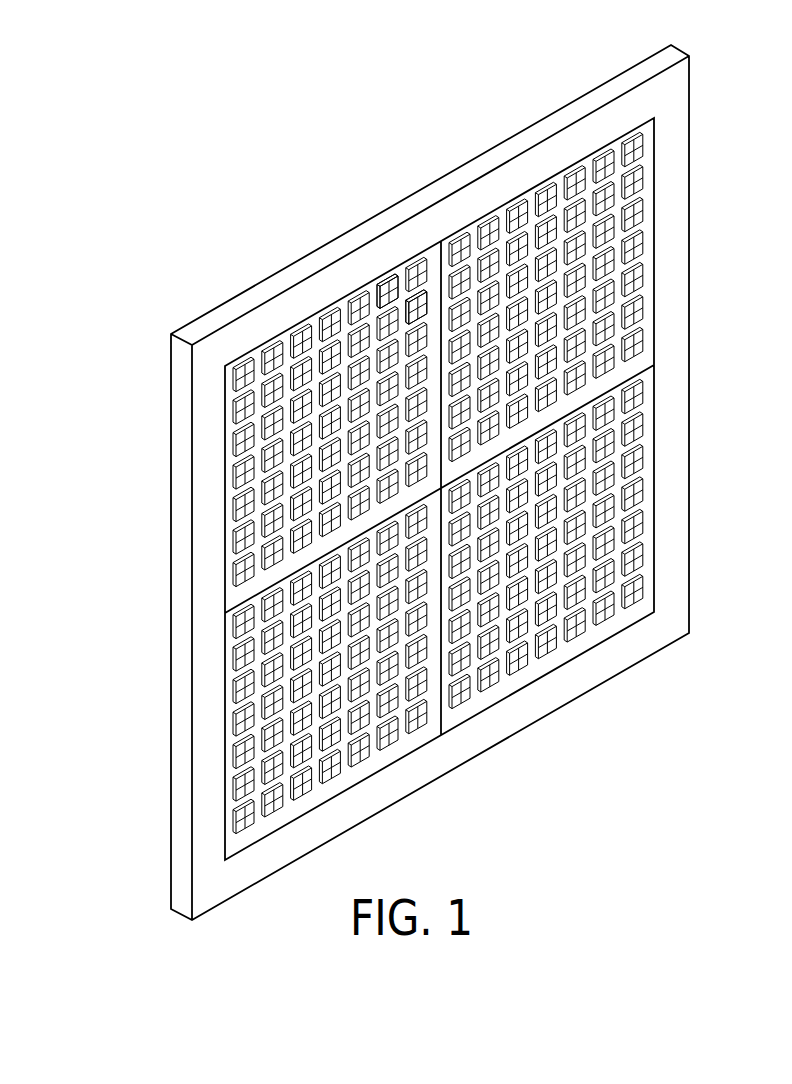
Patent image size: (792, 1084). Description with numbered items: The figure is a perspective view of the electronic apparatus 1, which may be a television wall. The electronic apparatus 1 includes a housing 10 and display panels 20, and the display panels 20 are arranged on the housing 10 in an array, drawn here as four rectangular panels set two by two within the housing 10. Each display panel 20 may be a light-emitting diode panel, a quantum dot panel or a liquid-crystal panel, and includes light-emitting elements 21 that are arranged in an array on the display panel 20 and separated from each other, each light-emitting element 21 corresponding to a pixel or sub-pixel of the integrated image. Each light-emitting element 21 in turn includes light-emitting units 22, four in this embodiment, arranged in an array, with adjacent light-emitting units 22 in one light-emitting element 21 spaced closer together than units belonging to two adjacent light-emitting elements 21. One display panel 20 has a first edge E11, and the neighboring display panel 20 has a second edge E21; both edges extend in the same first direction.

The electronic apparatus 1 is at (106, 112).
The housing 10 is at (222, 318).
The display panel 20 is at (670, 212).
The light-emitting element 21 is at (650, 133).
The light-emitting unit 22 is at (643, 160).
The first edge E11 is at (400, 285).
The second edge E21 is at (438, 305).